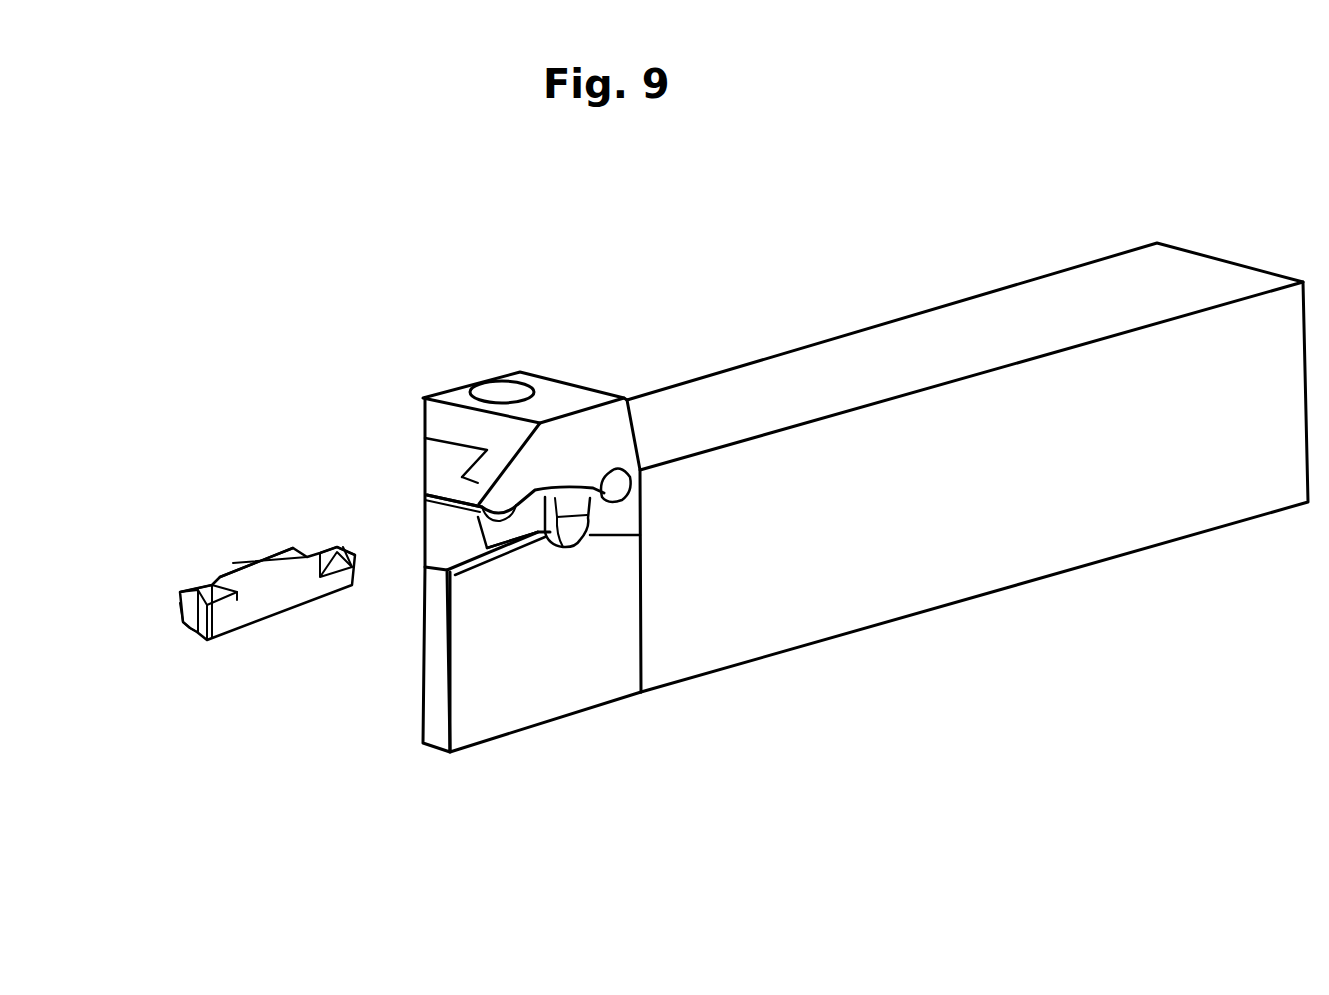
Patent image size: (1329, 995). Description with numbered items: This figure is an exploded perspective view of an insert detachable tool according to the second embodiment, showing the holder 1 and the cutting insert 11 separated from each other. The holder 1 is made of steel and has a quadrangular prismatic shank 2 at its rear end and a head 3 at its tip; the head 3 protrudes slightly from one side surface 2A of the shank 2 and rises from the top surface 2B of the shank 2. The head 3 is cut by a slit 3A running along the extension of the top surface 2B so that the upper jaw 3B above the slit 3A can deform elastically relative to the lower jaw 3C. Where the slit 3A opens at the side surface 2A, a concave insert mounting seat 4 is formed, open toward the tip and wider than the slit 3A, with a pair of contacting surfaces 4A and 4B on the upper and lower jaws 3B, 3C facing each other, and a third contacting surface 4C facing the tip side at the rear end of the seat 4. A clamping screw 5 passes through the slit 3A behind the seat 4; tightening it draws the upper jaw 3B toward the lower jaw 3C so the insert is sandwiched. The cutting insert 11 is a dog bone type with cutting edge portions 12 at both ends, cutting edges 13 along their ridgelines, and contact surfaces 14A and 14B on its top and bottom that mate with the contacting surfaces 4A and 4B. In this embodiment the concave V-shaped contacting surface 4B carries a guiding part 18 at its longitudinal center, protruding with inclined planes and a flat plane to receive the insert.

The holder 1 is at (684, 213).
The shank 2 is at (715, 310).
The side surface 2A is at (878, 580).
The top surface 2B is at (947, 328).
The head 3 is at (539, 318).
The slit 3A is at (427, 495).
The upper jaw 3B is at (480, 481).
The lower jaw 3C is at (497, 717).
The insert mounting seat 4 is at (556, 566).
The contacting surface 4A is at (530, 485).
The contacting surface 4B is at (466, 563).
The third contacting surface 4C is at (640, 535).
The clamping screw 5 is at (506, 390).
The cutting insert 11 is at (243, 518).
The cutting edge portion 12 is at (181, 584).
The cutting edge 13 is at (180, 603).
The contact surface 14A is at (233, 563).
The contact surface 14B is at (187, 640).
The guiding part 18 is at (514, 551).